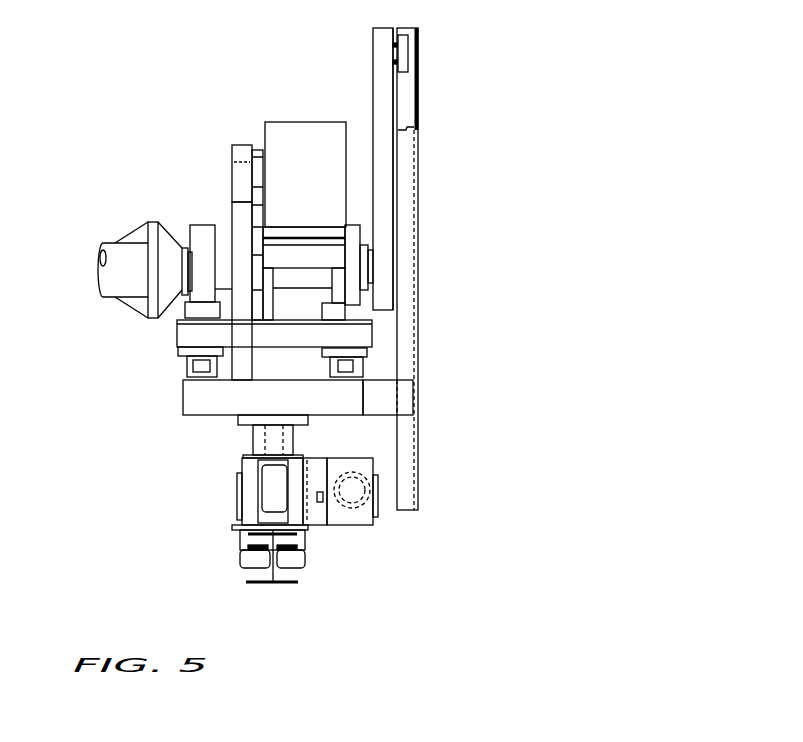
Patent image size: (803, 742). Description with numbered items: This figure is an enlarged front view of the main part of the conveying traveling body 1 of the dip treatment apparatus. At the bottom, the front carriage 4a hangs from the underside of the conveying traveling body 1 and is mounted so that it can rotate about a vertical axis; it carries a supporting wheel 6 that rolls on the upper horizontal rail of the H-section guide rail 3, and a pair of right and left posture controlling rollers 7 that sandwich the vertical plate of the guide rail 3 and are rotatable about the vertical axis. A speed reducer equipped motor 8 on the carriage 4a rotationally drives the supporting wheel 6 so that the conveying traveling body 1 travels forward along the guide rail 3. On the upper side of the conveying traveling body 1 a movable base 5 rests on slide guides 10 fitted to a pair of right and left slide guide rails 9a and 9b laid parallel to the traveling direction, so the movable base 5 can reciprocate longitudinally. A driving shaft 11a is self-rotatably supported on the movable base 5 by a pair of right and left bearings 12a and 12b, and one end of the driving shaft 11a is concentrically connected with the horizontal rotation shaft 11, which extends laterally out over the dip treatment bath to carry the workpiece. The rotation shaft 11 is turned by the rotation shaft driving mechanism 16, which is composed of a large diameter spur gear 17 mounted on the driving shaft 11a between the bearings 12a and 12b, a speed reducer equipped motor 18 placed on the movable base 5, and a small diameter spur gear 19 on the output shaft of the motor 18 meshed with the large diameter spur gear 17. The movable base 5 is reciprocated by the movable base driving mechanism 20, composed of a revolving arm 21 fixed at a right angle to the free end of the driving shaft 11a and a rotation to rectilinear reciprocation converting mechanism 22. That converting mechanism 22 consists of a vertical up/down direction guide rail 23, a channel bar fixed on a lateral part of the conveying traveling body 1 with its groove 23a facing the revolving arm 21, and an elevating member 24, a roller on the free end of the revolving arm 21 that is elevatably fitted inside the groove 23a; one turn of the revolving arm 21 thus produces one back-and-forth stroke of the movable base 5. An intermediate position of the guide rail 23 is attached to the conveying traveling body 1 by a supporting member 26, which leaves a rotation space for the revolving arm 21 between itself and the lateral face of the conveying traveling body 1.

The conveying traveling body 1 is at (210, 422).
The guide rail 3 is at (277, 572).
The front carriage 4a is at (229, 505).
The movable base 5 is at (368, 335).
The supporting wheel 6 is at (270, 480).
The posture controlling rollers 7 is at (240, 560).
The speed reducer equipped motor 8 is at (357, 513).
The slide guide rail 9a is at (200, 386).
The slide guide rail 9b is at (338, 380).
The slide guides 10 is at (182, 358).
The rotation shaft 11 is at (113, 273).
The driving shaft 11a is at (170, 263).
The bearing 12a is at (202, 285).
The bearing 12b is at (353, 276).
The rotation shaft driving mechanism 16 is at (220, 139).
The large diameter spur gear 17 is at (238, 232).
The speed reducer equipped motor 18 is at (288, 138).
The small diameter spur gear 19 is at (238, 180).
The movable base driving mechanism 20 is at (366, 61).
The revolving arm 21 is at (382, 125).
The rotation to rectilinear reciprocation converting mechanism 22 is at (422, 233).
The up/down direction guide rail 23 is at (407, 185).
The groove 23a is at (407, 105).
The elevating member 24 is at (403, 54).
The supporting member 26 is at (407, 397).